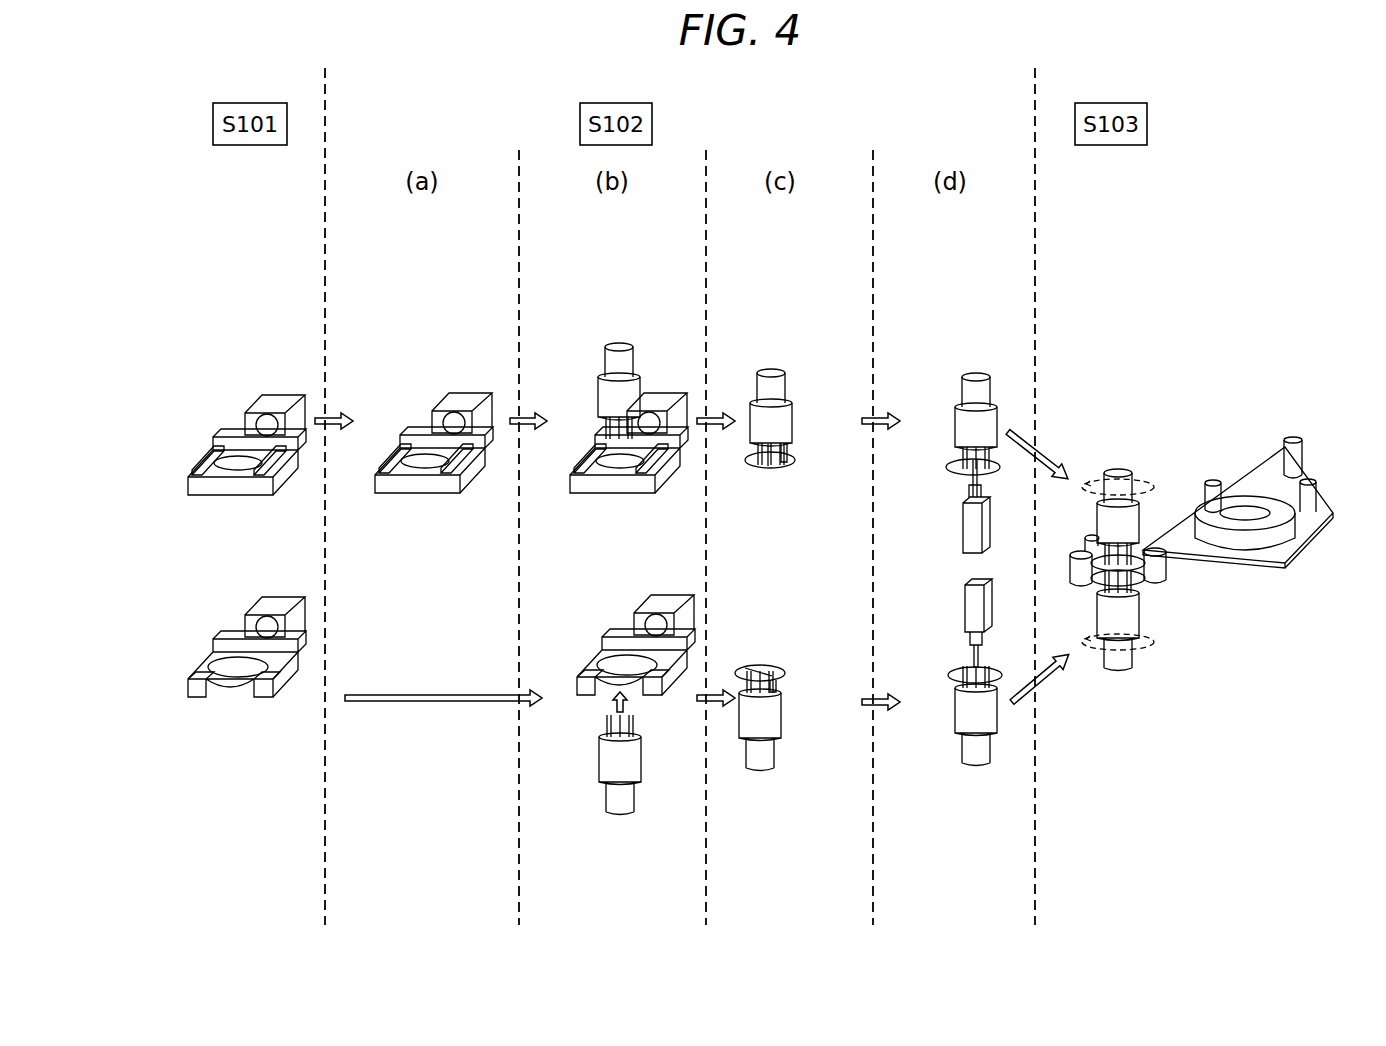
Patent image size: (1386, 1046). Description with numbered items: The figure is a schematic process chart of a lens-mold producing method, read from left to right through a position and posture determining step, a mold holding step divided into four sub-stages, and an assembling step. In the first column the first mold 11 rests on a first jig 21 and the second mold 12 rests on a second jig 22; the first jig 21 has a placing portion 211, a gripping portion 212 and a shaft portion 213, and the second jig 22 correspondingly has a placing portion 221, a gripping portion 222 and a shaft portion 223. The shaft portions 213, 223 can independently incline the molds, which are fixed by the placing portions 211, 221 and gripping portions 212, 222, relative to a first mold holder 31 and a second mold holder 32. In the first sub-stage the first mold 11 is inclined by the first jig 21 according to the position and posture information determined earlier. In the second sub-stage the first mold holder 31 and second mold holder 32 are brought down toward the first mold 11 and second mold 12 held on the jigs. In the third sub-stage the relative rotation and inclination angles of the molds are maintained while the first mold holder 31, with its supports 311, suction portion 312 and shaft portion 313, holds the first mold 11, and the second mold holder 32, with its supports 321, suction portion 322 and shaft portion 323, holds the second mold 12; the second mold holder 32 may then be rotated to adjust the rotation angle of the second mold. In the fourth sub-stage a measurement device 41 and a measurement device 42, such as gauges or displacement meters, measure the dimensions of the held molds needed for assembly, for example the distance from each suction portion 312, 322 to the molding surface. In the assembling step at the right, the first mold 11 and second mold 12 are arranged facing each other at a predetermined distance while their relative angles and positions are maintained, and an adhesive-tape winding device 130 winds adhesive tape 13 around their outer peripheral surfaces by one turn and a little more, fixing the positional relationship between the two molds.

The first mold 11 is at (236, 470).
The second mold 12 is at (237, 672).
The adhesive tape 13 is at (1180, 535).
The first jig 21 is at (233, 446).
The second jig 22 is at (236, 647).
The first mold holder 31 is at (608, 400).
The second mold holder 32 is at (610, 770).
The measurement device 41 is at (965, 526).
The measurement device 42 is at (966, 610).
The adhesive-tape winding device 130 is at (1201, 496).
The placing portion 211 is at (289, 483).
The gripping portion 212 is at (195, 478).
The shaft portion 213 is at (268, 420).
The placing portion 221 is at (290, 673).
The gripping portion 222 is at (196, 698).
The shaft portion 223 is at (262, 615).
The supports 311 is at (795, 457).
The suction portion 312 is at (766, 474).
The shaft portion 313 is at (1125, 480).
The supports 321 is at (785, 693).
The suction portion 322 is at (776, 670).
The shaft portion 323 is at (1112, 660).